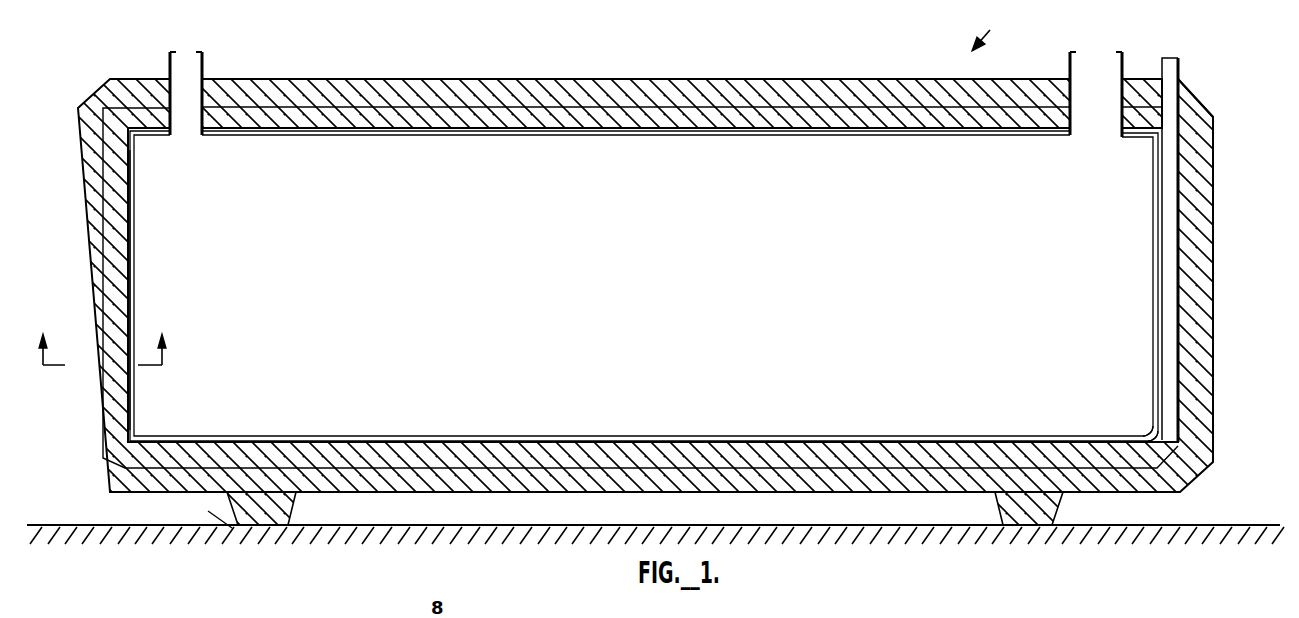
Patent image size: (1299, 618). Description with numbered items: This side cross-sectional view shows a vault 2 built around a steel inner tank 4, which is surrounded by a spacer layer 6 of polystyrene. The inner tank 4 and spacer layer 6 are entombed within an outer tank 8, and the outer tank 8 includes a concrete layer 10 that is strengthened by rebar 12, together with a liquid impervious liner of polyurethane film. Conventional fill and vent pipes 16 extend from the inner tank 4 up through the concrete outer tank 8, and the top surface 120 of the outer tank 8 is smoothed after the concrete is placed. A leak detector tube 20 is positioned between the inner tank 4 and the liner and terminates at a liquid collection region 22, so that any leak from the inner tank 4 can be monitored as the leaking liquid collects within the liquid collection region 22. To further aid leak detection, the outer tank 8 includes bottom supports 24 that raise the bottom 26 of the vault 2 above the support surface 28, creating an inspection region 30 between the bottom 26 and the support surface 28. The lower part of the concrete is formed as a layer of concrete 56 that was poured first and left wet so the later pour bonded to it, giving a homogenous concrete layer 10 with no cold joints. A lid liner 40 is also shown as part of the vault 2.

The vault 2 is at (521, 189).
The inner tank 4 is at (134, 300).
The spacer layer 6 is at (134, 243).
The outer tank 8 is at (77, 207).
The concrete layer 10 is at (1213, 228).
The rebar 12 is at (1213, 183).
The fill and vent pipes 16 is at (204, 58).
The leak detector tube 20 is at (1172, 58).
The liquid collection region 22 is at (1113, 438).
The bottom supports 24 is at (284, 506).
The bottom 26 is at (632, 492).
The support surface 28 is at (57, 523).
The inspection region 30 is at (212, 512).
The lid liner 40 is at (530, 130).
The layer of concrete 56 is at (625, 445).
The top surface 120 is at (712, 79).